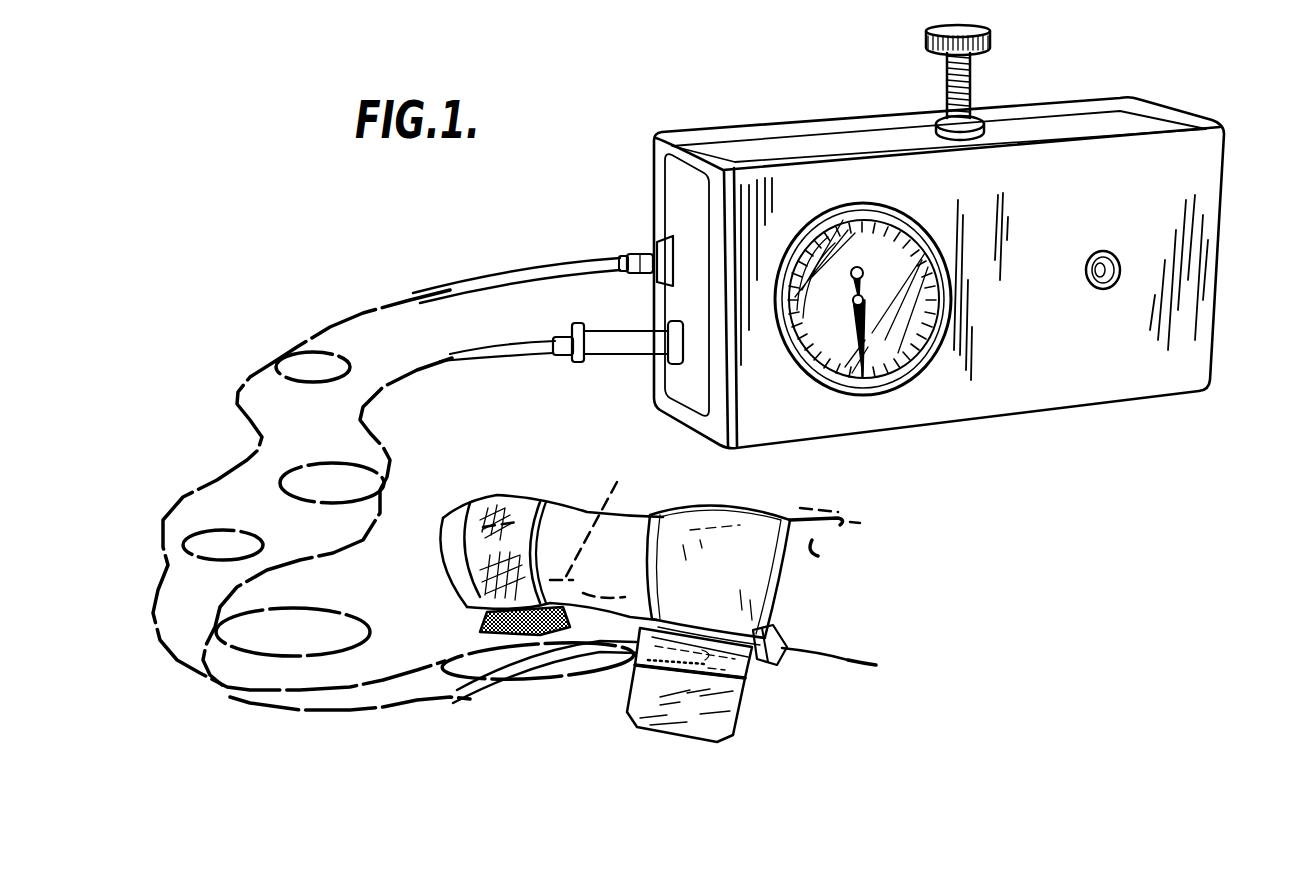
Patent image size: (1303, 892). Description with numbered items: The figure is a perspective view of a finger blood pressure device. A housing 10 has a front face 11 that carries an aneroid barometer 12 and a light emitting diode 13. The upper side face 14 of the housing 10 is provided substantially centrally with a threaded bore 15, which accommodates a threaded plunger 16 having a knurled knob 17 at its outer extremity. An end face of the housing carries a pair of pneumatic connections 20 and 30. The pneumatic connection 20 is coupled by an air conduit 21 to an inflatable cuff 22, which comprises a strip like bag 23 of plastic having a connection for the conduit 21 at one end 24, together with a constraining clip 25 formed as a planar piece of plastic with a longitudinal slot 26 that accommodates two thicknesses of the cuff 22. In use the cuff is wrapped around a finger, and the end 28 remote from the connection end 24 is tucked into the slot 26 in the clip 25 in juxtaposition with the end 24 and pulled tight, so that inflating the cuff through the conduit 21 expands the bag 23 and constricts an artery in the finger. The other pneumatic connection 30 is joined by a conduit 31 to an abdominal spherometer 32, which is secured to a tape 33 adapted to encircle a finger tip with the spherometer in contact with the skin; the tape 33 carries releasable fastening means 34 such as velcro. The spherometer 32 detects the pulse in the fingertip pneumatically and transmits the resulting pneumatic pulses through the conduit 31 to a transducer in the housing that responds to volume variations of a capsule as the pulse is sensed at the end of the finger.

The housing 10 is at (1165, 178).
The front face 11 is at (1163, 373).
The aneroid barometer 12 is at (898, 347).
The light emitting diode 13 is at (1107, 290).
The upper side face 14 is at (1122, 118).
The threaded bore 15 is at (940, 118).
The threaded plunger 16 is at (972, 68).
The knurled knob 17 is at (925, 35).
The pneumatic connection 20 is at (615, 340).
The air conduit 21 is at (515, 352).
The inflatable cuff 22 is at (700, 707).
The strip like bag 23 is at (745, 558).
The end 24 is at (705, 668).
The constraining clip 25 is at (781, 665).
The longitudinal slot 26 is at (775, 632).
The end 28 is at (680, 725).
The pneumatic connection 30 is at (627, 252).
The conduit 31 is at (520, 270).
The abdominal spherometer 32 is at (551, 533).
The tape 33 is at (543, 500).
The releasable fastening means 34 is at (478, 628).